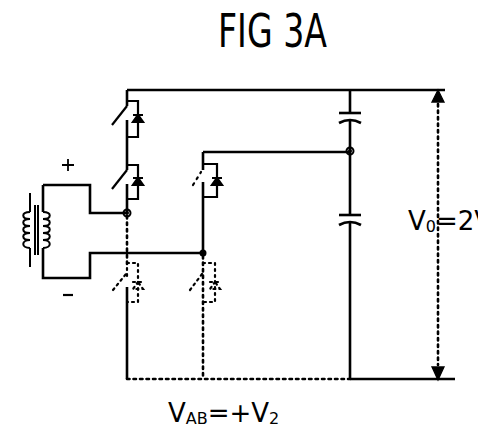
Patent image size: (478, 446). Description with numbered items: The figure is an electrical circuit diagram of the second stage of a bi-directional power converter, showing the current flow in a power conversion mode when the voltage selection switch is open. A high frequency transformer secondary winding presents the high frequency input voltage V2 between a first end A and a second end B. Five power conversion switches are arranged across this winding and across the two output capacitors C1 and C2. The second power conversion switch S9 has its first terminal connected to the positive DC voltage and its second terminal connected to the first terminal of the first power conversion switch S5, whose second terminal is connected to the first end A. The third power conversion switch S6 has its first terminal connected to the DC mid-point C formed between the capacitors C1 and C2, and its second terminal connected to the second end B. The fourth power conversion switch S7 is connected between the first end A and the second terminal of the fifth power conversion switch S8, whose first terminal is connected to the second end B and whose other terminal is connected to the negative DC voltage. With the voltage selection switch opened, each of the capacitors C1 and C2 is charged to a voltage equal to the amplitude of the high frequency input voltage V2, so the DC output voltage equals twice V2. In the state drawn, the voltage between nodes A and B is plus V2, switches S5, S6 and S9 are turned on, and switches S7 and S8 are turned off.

The second power conversion switch S9 is at (144, 119).
The first power conversion switch S5 is at (144, 182).
The third power conversion switch S6 is at (224, 180).
The fourth power conversion switch S7 is at (144, 282).
The fifth power conversion switch S8 is at (223, 282).
The capacitor C1 is at (351, 120).
The capacitor C2 is at (351, 221).
The first end of the secondary winding A is at (138, 216).
The second end of the secondary winding B is at (216, 251).
The DC mid-point C is at (364, 153).
The high frequency input voltage V2 is at (53, 230).